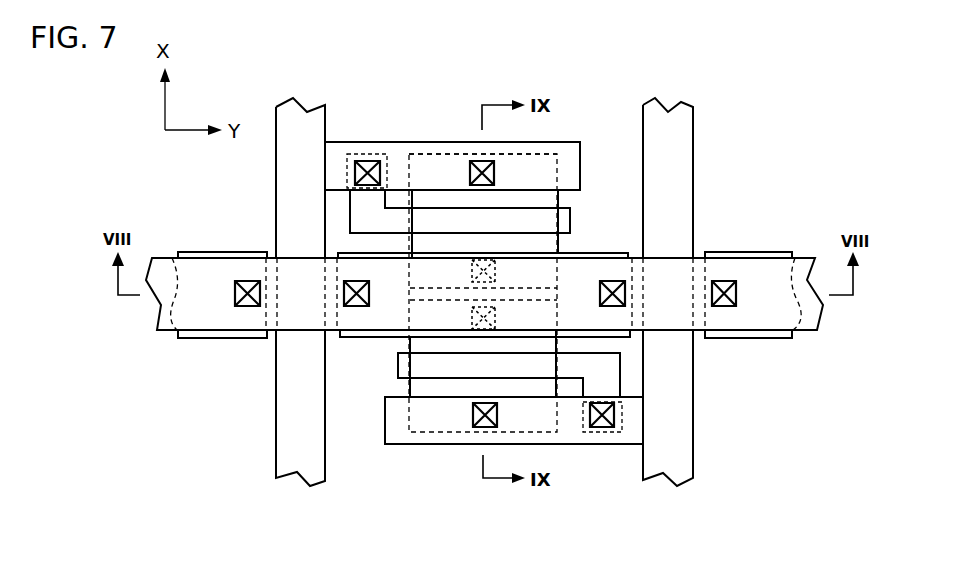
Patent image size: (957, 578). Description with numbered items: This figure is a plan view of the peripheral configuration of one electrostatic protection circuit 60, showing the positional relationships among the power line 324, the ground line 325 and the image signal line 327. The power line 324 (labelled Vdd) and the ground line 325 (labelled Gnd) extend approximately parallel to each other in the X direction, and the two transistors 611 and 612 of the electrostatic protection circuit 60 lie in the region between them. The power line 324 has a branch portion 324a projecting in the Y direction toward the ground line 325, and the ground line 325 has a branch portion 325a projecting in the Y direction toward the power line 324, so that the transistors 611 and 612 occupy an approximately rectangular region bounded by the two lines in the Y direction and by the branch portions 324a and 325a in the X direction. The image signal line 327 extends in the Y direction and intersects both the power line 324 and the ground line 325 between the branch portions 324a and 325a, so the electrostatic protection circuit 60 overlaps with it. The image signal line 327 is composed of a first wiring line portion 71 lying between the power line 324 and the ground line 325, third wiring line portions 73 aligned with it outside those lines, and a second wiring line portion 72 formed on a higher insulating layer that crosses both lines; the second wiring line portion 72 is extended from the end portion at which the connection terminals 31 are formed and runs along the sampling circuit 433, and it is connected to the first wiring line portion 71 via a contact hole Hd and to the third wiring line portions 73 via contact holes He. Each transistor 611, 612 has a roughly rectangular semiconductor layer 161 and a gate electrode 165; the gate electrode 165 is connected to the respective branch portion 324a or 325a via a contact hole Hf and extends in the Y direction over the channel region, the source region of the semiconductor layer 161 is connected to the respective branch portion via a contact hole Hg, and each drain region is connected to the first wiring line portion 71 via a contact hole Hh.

The electrostatic protection circuit 60 is at (542, 74).
The first wiring line portion 71 is at (600, 253).
The second wiring line portion 72 is at (823, 313).
The third wiring line portion 73 is at (222, 252).
The semiconductor layer 161 is at (558, 145).
The gate electrode 165 is at (580, 190).
The power line 324 is at (277, 186).
The branch portion of the power line 324a is at (468, 140).
The ground line 325 is at (693, 128).
The branch portion of the ground line 325a is at (415, 446).
The image signal line 327 is at (805, 243).
The transistor 611 is at (582, 221).
The transistor 612 is at (382, 371).
The sampling circuit 433 is at (165, 521).
The connection terminal 31 is at (803, 519).
The contact hole Hd is at (355, 310).
The contact hole He is at (247, 310).
The contact hole Hf is at (370, 162).
The contact hole Hg is at (475, 162).
The contact hole Hh is at (472, 318).
The power supply potential line Vdd is at (272, 278).
The ground potential line Gnd is at (689, 278).